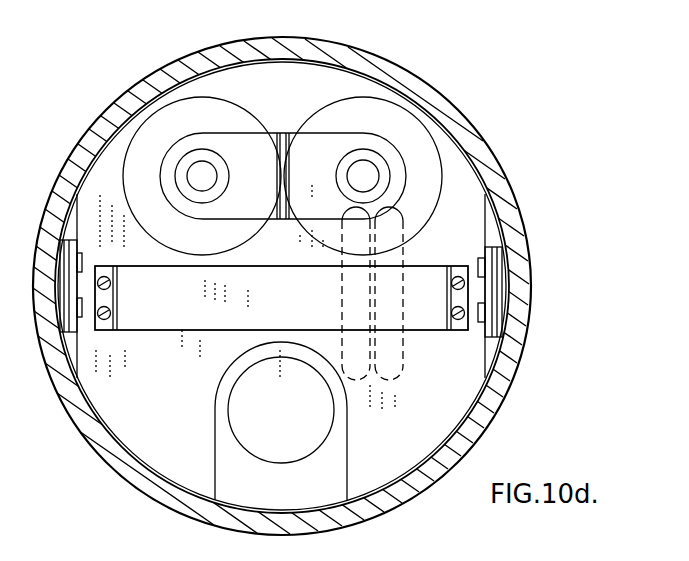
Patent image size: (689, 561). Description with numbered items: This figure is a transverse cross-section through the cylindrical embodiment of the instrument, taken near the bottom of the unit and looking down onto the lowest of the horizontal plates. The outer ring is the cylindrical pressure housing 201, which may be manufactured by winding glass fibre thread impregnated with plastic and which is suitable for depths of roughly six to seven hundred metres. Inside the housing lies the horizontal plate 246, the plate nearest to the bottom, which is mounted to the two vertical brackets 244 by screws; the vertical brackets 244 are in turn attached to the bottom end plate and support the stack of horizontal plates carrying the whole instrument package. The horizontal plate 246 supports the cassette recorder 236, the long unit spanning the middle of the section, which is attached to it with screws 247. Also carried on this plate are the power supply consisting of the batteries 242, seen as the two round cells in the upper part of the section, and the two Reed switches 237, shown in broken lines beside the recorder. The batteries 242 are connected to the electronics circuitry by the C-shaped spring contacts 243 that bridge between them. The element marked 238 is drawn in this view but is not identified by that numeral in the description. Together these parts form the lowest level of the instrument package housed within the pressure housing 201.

The cylindrical pressure housing 201 is at (507, 390).
The cassette recorder 236 is at (190, 316).
The Reed switches 237 is at (382, 378).
The cable 238 is at (285, 438).
The batteries 242 is at (183, 108).
The C-shaped spring contacts 243 is at (263, 147).
The vertical brackets 244 is at (500, 285).
The horizontal plate 246 is at (472, 368).
The screws 247 is at (457, 279).